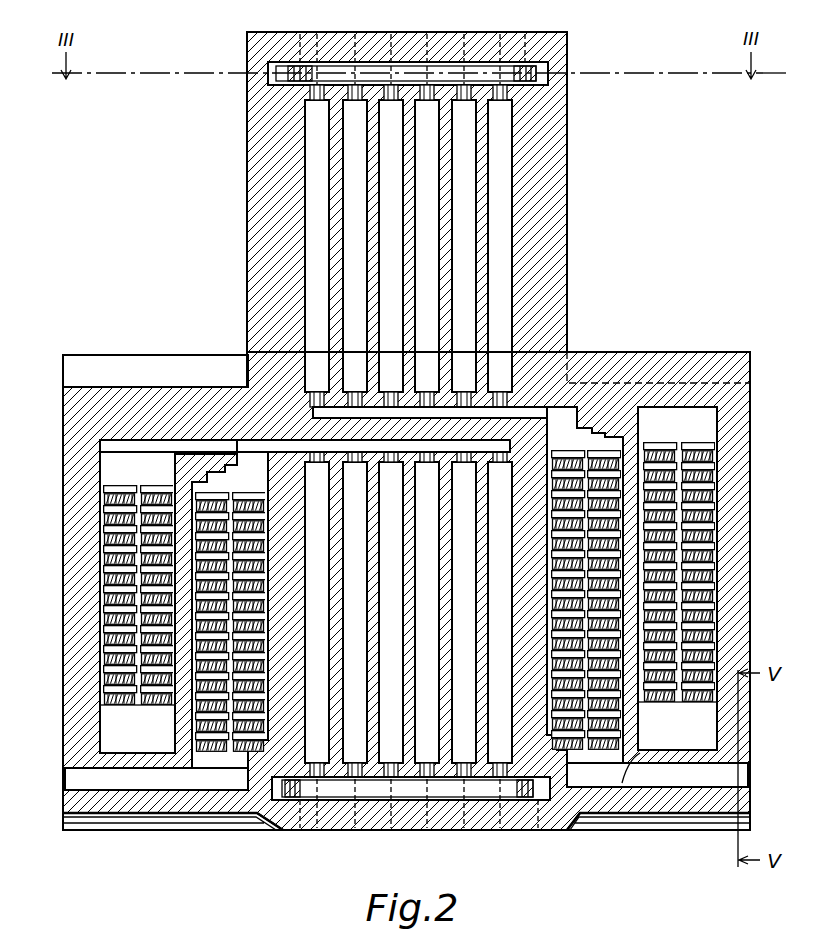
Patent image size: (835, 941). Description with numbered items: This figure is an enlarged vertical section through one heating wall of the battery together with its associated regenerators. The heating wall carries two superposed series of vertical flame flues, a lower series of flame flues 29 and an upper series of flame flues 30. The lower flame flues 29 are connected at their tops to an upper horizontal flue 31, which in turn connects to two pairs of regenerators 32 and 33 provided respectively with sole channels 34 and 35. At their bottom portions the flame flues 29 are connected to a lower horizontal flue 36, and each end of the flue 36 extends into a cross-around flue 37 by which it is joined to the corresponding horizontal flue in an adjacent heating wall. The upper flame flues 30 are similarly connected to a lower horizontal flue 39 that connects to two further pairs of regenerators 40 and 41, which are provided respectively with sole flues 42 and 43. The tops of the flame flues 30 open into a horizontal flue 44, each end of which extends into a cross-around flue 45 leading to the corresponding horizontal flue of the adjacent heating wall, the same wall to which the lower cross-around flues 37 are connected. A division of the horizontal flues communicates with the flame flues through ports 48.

The lower series of vertical flame flues 29 is at (346, 777).
The upper series of vertical flame flues 30 is at (503, 213).
The upper horizontal flue 31 is at (290, 440).
The regenerators 32 is at (110, 531).
The regenerators 33 is at (215, 597).
The sole channel 34 is at (112, 743).
The sole channel 35 is at (78, 779).
The lower horizontal flue 36 is at (378, 790).
The cross-around flue 37 is at (260, 813).
The lower horizontal flue 39 is at (517, 398).
The regenerators 40 is at (702, 443).
The regenerators 41 is at (598, 572).
The sole flue 42 is at (707, 740).
The sole flue 43 is at (728, 780).
The horizontal flue 44 is at (268, 86).
The cross-around flue 45 is at (548, 70).
The port 48 is at (508, 93).